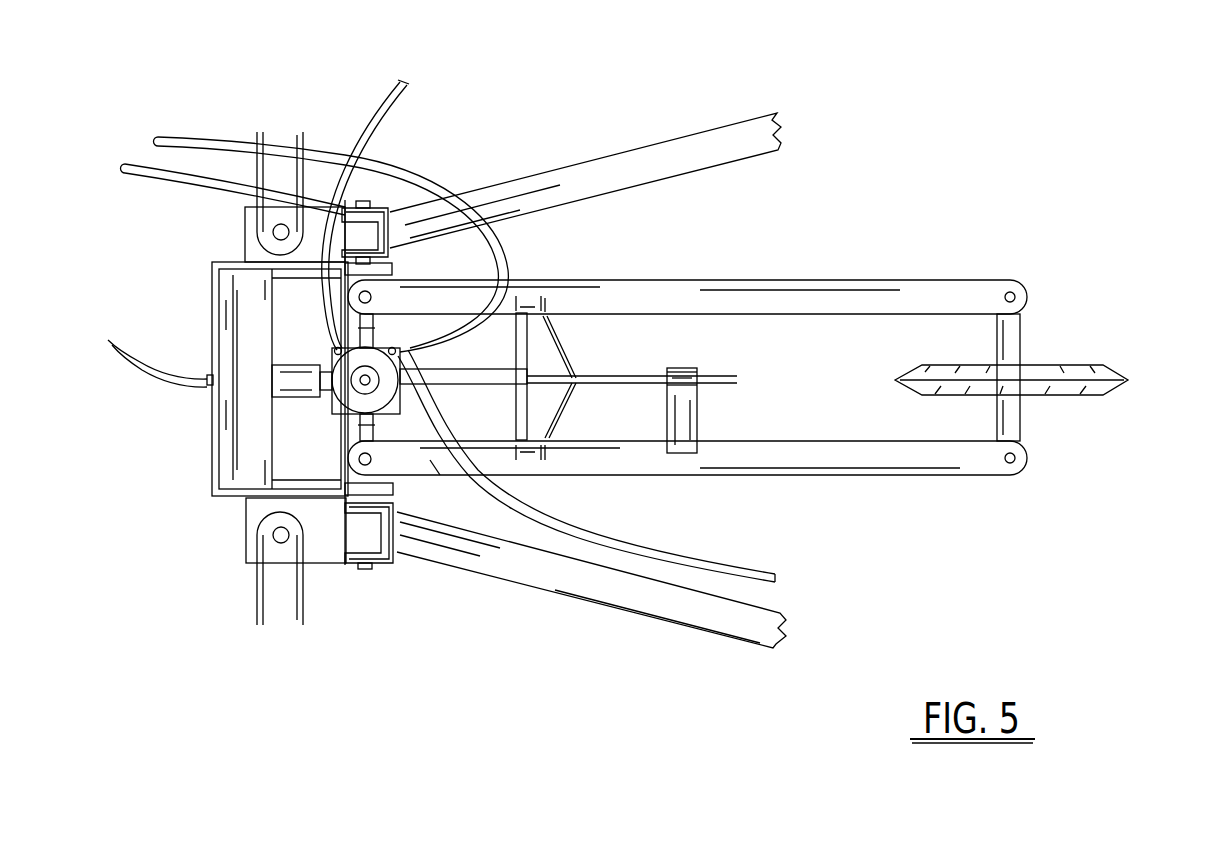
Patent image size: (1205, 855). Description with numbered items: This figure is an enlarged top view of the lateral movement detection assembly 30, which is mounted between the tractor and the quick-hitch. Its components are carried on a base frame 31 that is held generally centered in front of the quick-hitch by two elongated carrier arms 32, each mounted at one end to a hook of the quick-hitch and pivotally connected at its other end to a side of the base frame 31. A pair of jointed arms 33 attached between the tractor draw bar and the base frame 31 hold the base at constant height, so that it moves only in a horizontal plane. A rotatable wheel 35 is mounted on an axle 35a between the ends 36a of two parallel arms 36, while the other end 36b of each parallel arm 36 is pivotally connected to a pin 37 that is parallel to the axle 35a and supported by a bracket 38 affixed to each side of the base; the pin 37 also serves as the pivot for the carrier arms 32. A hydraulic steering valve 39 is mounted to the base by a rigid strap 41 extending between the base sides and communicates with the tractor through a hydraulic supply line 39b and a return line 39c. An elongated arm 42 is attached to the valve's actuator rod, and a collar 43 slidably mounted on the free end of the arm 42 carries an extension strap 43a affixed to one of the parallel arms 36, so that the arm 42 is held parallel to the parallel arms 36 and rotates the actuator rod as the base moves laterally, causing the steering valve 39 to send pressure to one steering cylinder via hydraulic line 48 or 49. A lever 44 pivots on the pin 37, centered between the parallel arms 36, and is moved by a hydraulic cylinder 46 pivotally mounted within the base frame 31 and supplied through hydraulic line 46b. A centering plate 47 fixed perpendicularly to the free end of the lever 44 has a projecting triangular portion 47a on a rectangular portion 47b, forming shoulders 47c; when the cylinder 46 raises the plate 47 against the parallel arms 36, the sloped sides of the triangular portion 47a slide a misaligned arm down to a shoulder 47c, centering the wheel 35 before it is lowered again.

The lateral movement detection assembly 30 is at (500, 70).
The base frame 31 is at (232, 453).
The carrier arm 32 is at (634, 155).
The jointed arm 33 is at (267, 197).
The rotatable wheel 35 is at (1090, 368).
The axle 35a is at (1012, 323).
The parallel arm 36 is at (882, 290).
The end of parallel arm 36a is at (1015, 280).
The other end of parallel arm 36b is at (430, 472).
The pin 37 is at (372, 329).
The bracket 38 is at (390, 268).
The hydraulic steering valve 39 is at (333, 355).
The hydraulic supply line 39b is at (172, 173).
The return line 39c is at (205, 142).
The rigid strap 41 is at (345, 433).
The elongated arm 42 is at (623, 383).
The collar 43 is at (682, 372).
The extension strap 43a is at (692, 398).
The lever 44 is at (488, 387).
The hydraulic cylinder 46 is at (300, 373).
The hydraulic line 46b is at (145, 367).
The centering plate 47 is at (552, 358).
The triangular portion 47a is at (553, 332).
The rectangular portion 47b is at (530, 293).
The shoulder 47c is at (547, 300).
The hydraulic line 48 is at (723, 573).
The hydraulic line 49 is at (400, 92).